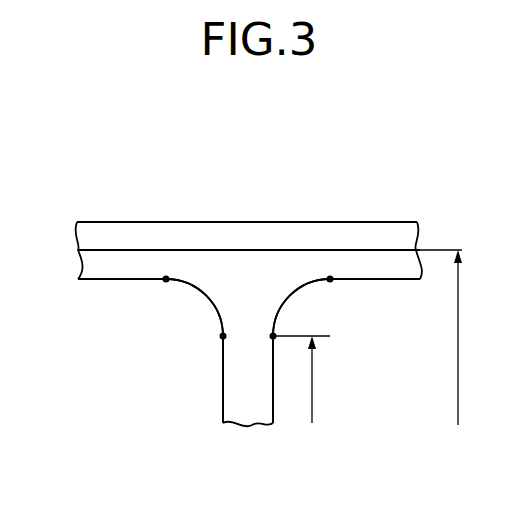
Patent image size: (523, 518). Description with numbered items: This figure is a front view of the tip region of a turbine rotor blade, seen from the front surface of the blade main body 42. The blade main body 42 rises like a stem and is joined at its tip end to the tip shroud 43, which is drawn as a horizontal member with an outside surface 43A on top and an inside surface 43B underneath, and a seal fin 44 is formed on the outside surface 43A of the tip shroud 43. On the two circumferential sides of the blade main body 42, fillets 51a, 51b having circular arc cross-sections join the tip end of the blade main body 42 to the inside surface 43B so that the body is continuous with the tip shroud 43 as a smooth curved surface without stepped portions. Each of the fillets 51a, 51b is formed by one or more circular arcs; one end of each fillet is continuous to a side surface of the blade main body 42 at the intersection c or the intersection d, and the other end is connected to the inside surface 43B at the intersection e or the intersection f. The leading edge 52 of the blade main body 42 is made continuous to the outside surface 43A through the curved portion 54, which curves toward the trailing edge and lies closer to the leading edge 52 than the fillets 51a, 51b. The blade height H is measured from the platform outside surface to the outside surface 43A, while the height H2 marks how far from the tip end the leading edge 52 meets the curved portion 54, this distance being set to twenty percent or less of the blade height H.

The curved portion 54 is at (245, 295).
The seal fin 44 is at (280, 233).
The tip shroud 43 is at (375, 250).
The outside surface of the tip shroud 43A is at (333, 250).
The inside surface of the tip shroud 43B is at (383, 280).
The blade main body 42 is at (248, 412).
The leading edge 52 is at (235, 387).
The fillet 51a is at (330, 282).
The fillet 51b is at (203, 303).
The intersection c is at (274, 337).
The intersection d is at (222, 336).
The intersection e is at (331, 280).
The intersection f is at (165, 280).
The blade height H is at (454, 337).
The height H2 is at (311, 379).